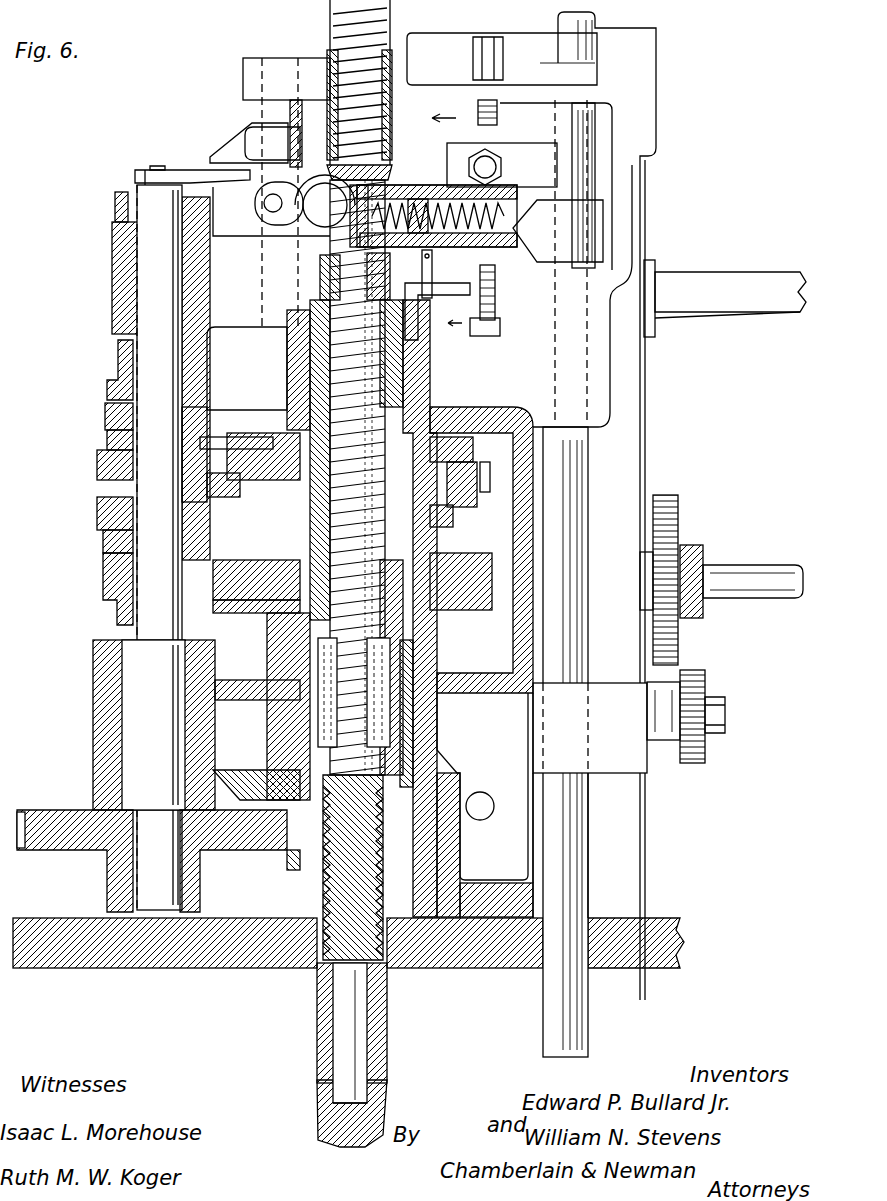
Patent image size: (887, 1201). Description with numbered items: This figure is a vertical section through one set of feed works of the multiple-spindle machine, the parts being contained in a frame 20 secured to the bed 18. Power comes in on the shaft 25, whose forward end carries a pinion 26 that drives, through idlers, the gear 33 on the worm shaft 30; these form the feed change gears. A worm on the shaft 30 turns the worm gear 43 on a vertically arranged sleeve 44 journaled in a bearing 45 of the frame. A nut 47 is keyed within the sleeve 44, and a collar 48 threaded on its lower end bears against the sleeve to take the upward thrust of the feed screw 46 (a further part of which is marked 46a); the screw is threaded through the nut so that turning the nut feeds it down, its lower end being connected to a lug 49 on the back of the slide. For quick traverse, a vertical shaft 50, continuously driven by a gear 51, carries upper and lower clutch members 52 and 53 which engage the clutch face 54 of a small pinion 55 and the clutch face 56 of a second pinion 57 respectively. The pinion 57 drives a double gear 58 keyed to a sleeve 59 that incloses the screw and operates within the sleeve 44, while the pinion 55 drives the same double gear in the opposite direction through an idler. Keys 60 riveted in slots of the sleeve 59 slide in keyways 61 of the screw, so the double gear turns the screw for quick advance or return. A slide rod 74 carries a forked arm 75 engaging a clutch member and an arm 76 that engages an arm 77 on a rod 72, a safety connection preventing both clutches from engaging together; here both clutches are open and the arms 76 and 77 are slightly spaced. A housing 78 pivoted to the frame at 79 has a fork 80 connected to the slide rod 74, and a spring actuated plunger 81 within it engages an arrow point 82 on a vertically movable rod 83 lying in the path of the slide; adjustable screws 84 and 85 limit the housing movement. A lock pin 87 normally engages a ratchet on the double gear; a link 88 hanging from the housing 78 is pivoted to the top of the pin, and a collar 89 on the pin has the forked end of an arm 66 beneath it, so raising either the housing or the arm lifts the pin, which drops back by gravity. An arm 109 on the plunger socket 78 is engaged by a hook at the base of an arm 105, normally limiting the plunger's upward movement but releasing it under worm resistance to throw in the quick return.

The bed 18 is at (75, 955).
The frame 20 is at (636, 410).
The shaft 25 is at (727, 727).
The pinion 26 is at (698, 768).
The worm shaft 30 is at (733, 578).
The fourth gear 33 is at (678, 514).
The worm gear 43 is at (402, 687).
The sleeve 44 is at (407, 740).
The bearing 45 is at (292, 722).
The feed screw 46 is at (340, 32).
The worm 46a is at (385, 152).
The nut 47 is at (407, 828).
The collar 48 is at (292, 862).
The lug 49 is at (322, 1092).
The vertical shaft 50 is at (154, 725).
The gear 51 is at (46, 810).
The upper clutch member 52 is at (118, 358).
The lower clutch member 53 is at (117, 605).
The clutch face 54 is at (105, 425).
The small pinion 55 is at (100, 465).
The clutch face 56 is at (103, 545).
The second pinion 57 is at (100, 515).
The double gear 58 is at (480, 500).
The sleeve 59 is at (412, 392).
The keys 60 is at (413, 670).
The keyways 61 is at (292, 615).
The arm 66 is at (488, 338).
The rod 72 is at (160, 168).
The slide rod 74 is at (265, 338).
The forked arm 75 is at (252, 392).
The arm 76 is at (238, 153).
The arm 77 is at (192, 172).
The housing 78 is at (412, 193).
The pivot 79 is at (325, 201).
The fork 80 is at (265, 215).
The spring actuated plunger 81 is at (518, 228).
The arrow point 82 is at (520, 252).
The rod 83 is at (575, 470).
The adjustable screw 84 is at (571, 213).
The adjustable screw 85 is at (498, 120).
The pin 87 is at (455, 420).
The link 88 is at (433, 270).
The collar 89 is at (497, 290).
The arm 105 is at (730, 295).
The arm 109 is at (502, 165).